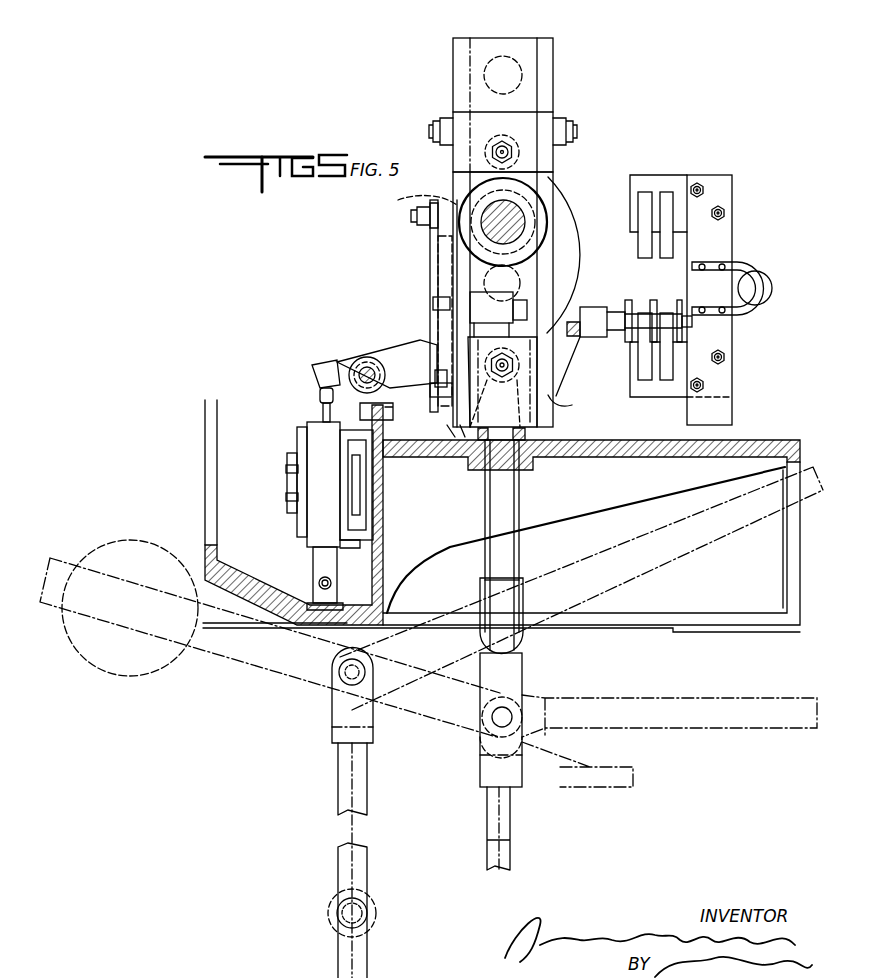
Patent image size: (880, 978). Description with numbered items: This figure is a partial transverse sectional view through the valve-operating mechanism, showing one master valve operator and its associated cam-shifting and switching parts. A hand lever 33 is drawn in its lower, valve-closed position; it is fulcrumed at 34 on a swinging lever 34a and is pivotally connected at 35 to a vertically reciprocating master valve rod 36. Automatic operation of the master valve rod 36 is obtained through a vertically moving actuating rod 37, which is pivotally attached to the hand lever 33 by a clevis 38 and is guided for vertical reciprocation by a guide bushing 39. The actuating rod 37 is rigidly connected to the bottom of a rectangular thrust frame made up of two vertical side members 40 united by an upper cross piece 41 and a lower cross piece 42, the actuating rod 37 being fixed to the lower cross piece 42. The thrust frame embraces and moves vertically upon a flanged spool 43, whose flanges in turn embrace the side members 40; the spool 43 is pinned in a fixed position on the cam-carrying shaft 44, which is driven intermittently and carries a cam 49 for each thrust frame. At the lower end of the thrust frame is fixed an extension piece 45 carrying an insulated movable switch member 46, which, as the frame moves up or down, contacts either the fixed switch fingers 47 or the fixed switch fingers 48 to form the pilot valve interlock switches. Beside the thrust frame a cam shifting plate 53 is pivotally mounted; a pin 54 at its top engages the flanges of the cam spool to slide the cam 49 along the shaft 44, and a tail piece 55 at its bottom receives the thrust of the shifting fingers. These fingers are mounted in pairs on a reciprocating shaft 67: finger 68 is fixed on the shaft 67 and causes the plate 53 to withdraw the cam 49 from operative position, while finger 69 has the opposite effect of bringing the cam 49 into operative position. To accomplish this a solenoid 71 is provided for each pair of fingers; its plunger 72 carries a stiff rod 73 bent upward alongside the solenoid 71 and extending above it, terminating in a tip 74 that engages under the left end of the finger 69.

The hand lever 33 is at (667, 700).
The fulcrum 34 is at (345, 680).
The swinging lever 34a is at (340, 790).
The pivotal connection 35 is at (507, 713).
The master valve rod 36 is at (487, 818).
The actuating rod 37 is at (519, 502).
The clevis 38 is at (522, 673).
The guide bushing 39 is at (535, 442).
The side member 40 is at (453, 179).
The upper cross piece 41 is at (523, 123).
The lower cross piece 42 is at (553, 400).
The flanged spool 43 is at (482, 226).
The cam-carrying shaft 44 is at (500, 230).
The extension piece 45 is at (590, 318).
The insulated movable switch member 46 is at (623, 313).
The fixed switch fingers 47 is at (666, 236).
The fixed switch fingers 48 is at (680, 346).
The cam 49 is at (564, 224).
The cam shifting plate 53 is at (444, 281).
The pin 54 is at (424, 210).
The tail piece 55 is at (447, 428).
The reciprocating shaft 67 is at (362, 358).
The shifting finger 68 is at (425, 378).
The shifting finger 69 is at (320, 364).
The solenoid 71 is at (325, 490).
The plunger 72 is at (318, 570).
The stiff rod 73 is at (321, 412).
The tip 74 is at (318, 396).